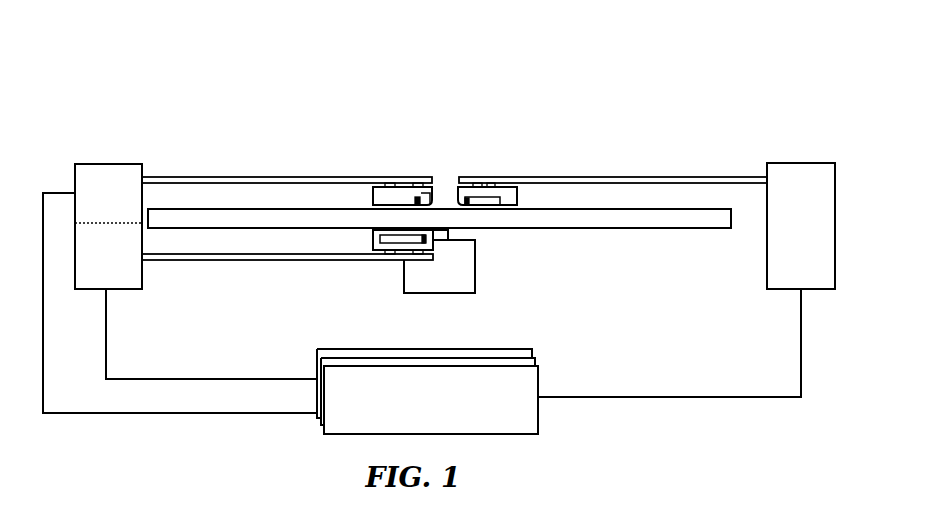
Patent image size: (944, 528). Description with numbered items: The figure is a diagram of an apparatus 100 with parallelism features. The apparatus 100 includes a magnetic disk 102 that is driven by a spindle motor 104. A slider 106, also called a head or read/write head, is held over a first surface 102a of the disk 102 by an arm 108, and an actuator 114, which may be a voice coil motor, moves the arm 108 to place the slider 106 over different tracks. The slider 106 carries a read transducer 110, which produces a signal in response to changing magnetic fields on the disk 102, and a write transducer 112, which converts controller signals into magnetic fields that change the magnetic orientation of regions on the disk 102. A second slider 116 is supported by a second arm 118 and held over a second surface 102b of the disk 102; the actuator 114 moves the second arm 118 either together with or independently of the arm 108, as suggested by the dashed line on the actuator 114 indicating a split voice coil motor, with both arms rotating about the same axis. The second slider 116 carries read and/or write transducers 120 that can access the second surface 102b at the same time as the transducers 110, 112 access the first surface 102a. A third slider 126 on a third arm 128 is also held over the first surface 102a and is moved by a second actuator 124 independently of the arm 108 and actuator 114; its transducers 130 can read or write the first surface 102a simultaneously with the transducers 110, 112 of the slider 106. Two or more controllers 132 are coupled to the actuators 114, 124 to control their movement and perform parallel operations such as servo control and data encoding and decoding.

The apparatus 100 is at (566, 122).
The magnetic disk 102 is at (694, 220).
The first surface 102a is at (598, 208).
The second surface 102b is at (620, 228).
The spindle motor 104 is at (418, 294).
The slider 106 is at (387, 195).
The arm 108 is at (268, 177).
The read transducer 110 is at (428, 195).
The write transducer 112 is at (417, 202).
The actuator 114 is at (100, 165).
The second slider 116 is at (382, 250).
The second arm 118 is at (255, 261).
The read and/or write transducers 120 is at (397, 237).
The second actuator 124 is at (792, 163).
The third slider 126 is at (487, 193).
The third arm 128 is at (624, 177).
The read and/or write transducers 130 is at (470, 202).
The controllers 132 is at (500, 360).